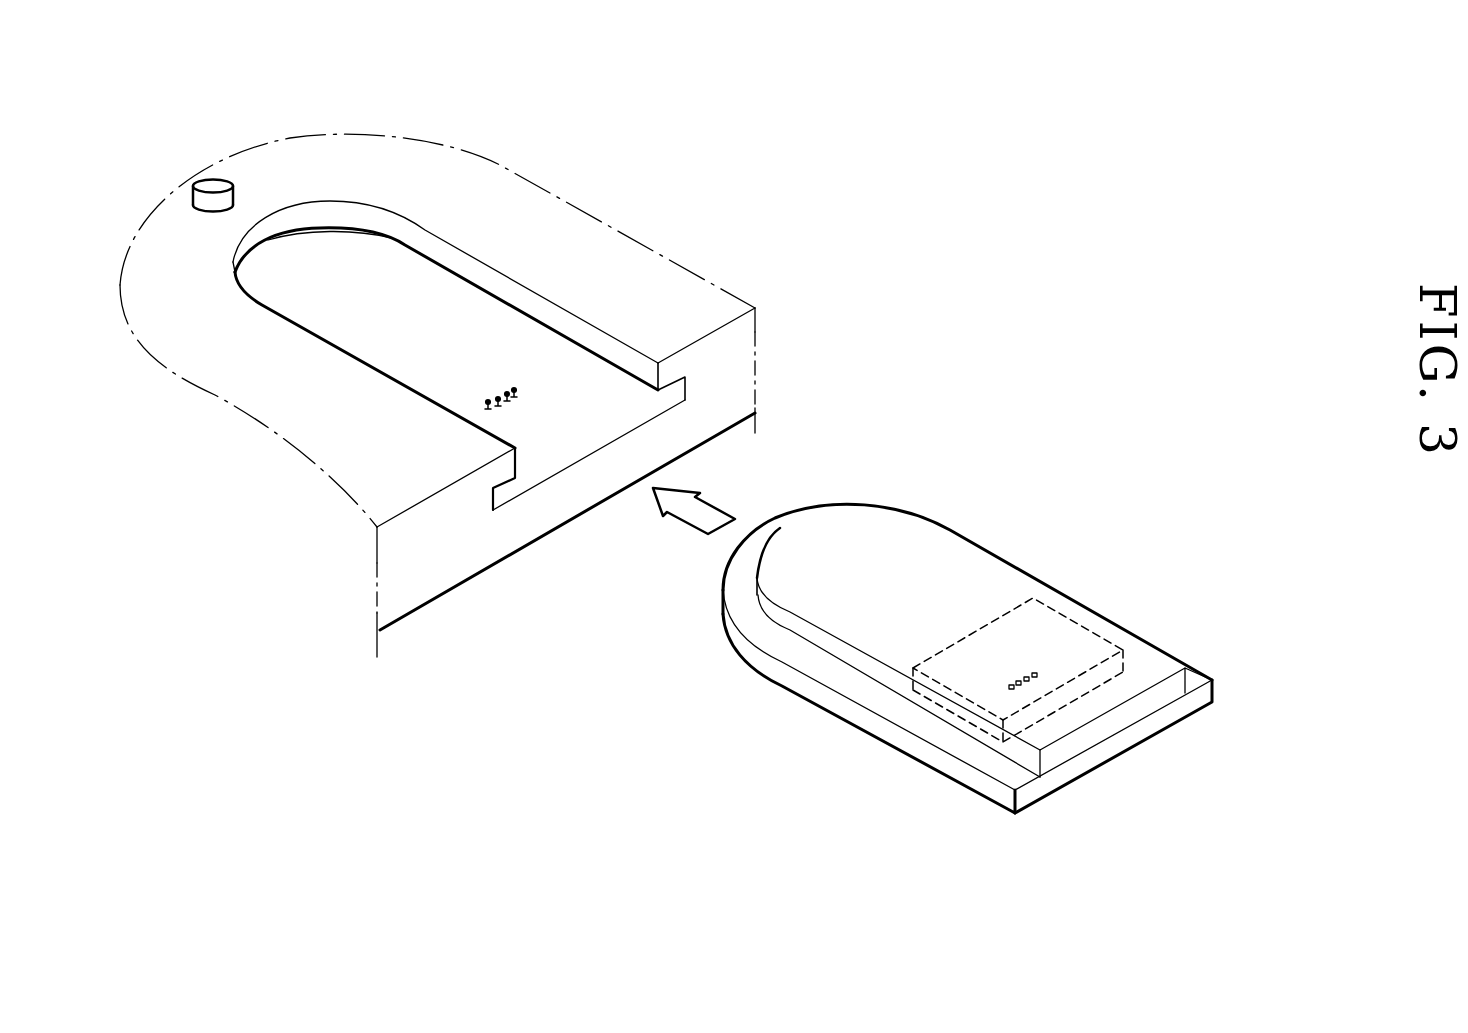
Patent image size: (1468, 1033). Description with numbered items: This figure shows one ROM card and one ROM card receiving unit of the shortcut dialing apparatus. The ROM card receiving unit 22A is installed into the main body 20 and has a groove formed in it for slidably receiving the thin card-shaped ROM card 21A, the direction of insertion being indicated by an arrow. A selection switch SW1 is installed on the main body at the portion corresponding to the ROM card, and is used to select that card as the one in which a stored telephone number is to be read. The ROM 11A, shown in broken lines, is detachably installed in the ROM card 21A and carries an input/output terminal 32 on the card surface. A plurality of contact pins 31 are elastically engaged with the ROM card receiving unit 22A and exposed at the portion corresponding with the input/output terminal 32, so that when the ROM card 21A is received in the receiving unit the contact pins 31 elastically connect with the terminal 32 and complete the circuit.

The main body 20 is at (740, 362).
The ROM card receiving unit 22A is at (513, 317).
The selection switch SW1 is at (208, 187).
The contact pin 31 is at (515, 395).
The ROM card 21A is at (973, 555).
The ROM 11A is at (1065, 627).
The input/output terminal 32 is at (1038, 677).